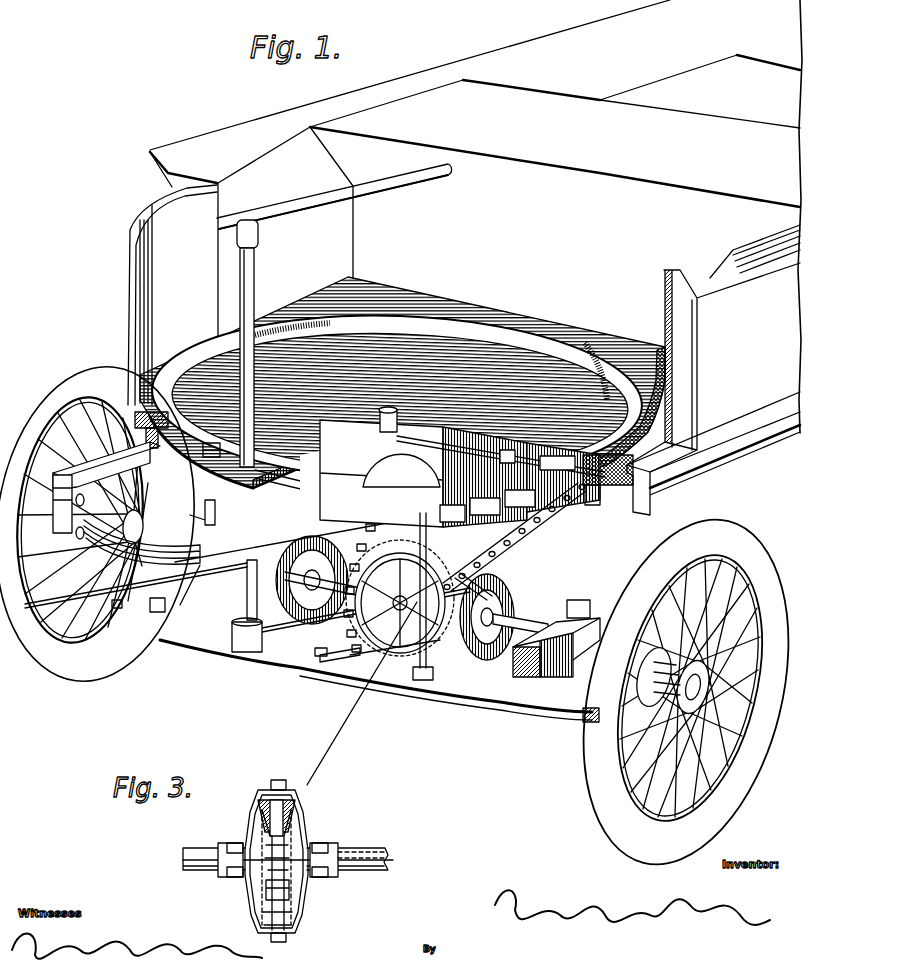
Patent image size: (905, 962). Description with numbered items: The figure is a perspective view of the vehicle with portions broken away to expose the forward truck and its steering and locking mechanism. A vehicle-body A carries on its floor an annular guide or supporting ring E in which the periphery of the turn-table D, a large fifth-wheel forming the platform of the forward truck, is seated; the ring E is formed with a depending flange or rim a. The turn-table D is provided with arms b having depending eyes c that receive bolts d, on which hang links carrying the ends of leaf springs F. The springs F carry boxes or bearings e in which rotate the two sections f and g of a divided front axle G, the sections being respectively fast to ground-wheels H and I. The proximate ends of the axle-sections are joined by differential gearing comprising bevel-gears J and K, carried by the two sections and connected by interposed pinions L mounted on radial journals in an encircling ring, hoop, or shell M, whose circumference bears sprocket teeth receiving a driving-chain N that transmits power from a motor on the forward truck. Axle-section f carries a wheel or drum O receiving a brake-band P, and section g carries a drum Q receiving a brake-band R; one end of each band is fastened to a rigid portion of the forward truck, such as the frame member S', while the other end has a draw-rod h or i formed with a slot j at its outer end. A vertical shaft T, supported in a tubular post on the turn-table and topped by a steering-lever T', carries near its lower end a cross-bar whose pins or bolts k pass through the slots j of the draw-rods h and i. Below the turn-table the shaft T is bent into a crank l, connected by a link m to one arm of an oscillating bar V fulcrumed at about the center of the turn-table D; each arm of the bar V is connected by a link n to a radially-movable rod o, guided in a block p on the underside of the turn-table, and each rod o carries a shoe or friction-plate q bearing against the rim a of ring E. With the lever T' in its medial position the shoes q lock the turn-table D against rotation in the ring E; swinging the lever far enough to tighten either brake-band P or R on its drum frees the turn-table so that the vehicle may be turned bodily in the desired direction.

In FIG. 1, the vehicle-body A is at (713, 453).
In FIG. 1, the turn-table D is at (540, 365).
In FIG. 1, the annular guide or supporting ring E is at (600, 378).
In FIG. 1, the vertical shaft T is at (256, 343).
In FIG. 1, the steering-lever T' is at (334, 196).
In FIG. 1, the ground-wheel H is at (120, 665).
In FIG. 1, the ground-wheel I is at (595, 795).
In FIG. 1, the arms b is at (90, 468).
In FIG. 1, the depending eyes c is at (53, 500).
In FIG. 1, the crank l is at (210, 512).
In FIG. 1, the wheel or drum O is at (228, 638).
In FIG. 1, the link or rod m is at (381, 473).
In FIG. 1, the oscillating bar V is at (401, 468).
In FIG. 1, the link or rod n is at (392, 436).
In FIG. 1, the radially-movable rod o is at (535, 452).
In FIG. 1, the block p is at (556, 466).
In FIG. 1, the shoe or friction-plate q is at (600, 458).
In FIG. 1, the depending flange or rim a is at (592, 497).
In FIG. 1, the driving-chain N is at (532, 535).
In FIG. 1, the brake-band P is at (252, 563).
In FIG. 1, the axle-section f is at (325, 574).
In FIG. 3, the axle-section f is at (194, 848).
In FIG. 1, the wheel or drum Q is at (287, 553).
In FIG. 1, the ring, hoop, or shell M is at (394, 588).
In FIG. 3, the ring, hoop, or shell M is at (275, 790).
In FIG. 1, the brake-band R is at (480, 580).
In FIG. 1, the divided front axle G is at (520, 629).
In FIG. 3, the divided front axle G is at (361, 874).
In FIG. 1, the springs F is at (558, 628).
In FIG. 1, the axle-section g is at (566, 606).
In FIG. 3, the axle-section g is at (372, 854).
In FIG. 1, the frame rail S' is at (379, 681).
In FIG. 1, the pins or bolts k is at (318, 656).
In FIG. 1, the slot j is at (340, 658).
In FIG. 1, the draw-rod i is at (395, 648).
In FIG. 1, the boxes or bearings e is at (156, 612).
In FIG. 1, the draw-rod h is at (192, 605).
In FIG. 1, the bolts d is at (40, 606).
In FIG. 3, the bevel-gear J is at (256, 810).
In FIG. 3, the pinions L is at (303, 806).
In FIG. 3, the bevel-gear K is at (304, 826).